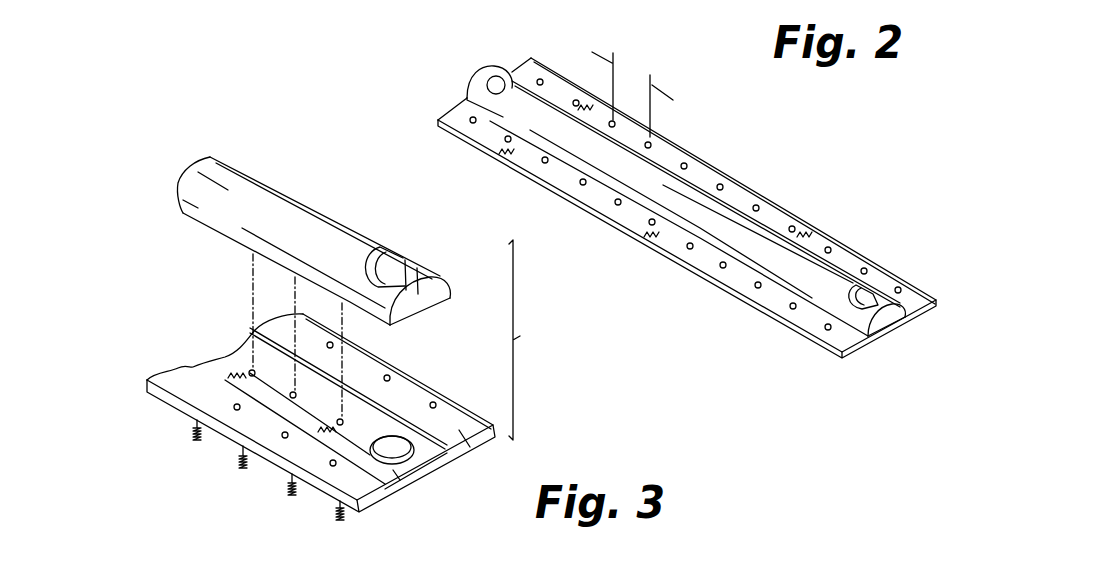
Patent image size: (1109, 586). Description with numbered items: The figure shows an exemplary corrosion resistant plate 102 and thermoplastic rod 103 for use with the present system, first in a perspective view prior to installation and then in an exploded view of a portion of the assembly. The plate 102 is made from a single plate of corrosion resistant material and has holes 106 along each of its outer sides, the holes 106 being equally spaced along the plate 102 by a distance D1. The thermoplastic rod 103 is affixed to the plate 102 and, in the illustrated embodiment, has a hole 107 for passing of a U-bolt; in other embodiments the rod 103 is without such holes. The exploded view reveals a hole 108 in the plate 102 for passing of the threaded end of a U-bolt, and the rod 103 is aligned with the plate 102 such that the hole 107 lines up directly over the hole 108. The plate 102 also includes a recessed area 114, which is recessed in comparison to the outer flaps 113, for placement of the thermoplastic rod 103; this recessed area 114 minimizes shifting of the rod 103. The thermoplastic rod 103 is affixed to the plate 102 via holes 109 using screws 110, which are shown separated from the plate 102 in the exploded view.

In FIG. 2, the corrosion resistant plate 102 is at (775, 215).
In FIG. 3, the corrosion resistant plate 102 is at (467, 417).
In FIG. 2, the thermoplastic rod 103 is at (895, 328).
In FIG. 3, the thermoplastic rod 103 is at (278, 187).
In FIG. 2, the holes 106 is at (718, 185).
In FIG. 3, the holes 106 is at (237, 393).
In FIG. 2, the hole 107 is at (873, 290).
In FIG. 3, the hole 107 is at (393, 267).
In FIG. 3, the hole 108 is at (393, 453).
In FIG. 3, the holes 109 is at (247, 320).
In FIG. 3, the screws 110 is at (197, 437).
In FIG. 3, the outer flaps 113 is at (457, 428).
In FIG. 3, the recessed area 114 is at (393, 470).
In FIG. 2, the distance D1 is at (632, 85).